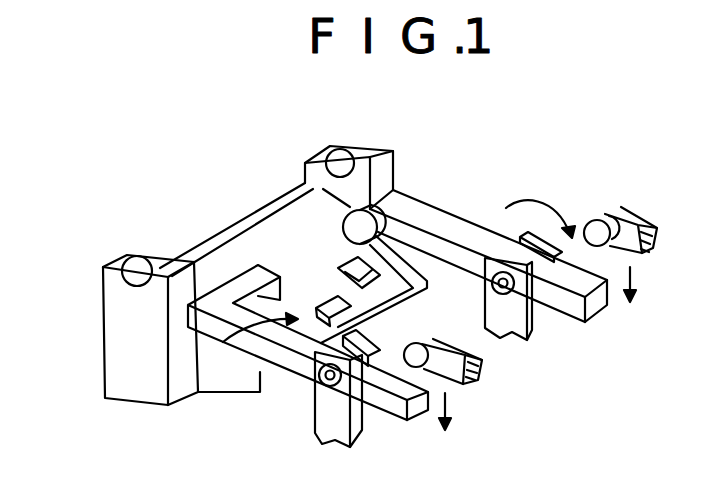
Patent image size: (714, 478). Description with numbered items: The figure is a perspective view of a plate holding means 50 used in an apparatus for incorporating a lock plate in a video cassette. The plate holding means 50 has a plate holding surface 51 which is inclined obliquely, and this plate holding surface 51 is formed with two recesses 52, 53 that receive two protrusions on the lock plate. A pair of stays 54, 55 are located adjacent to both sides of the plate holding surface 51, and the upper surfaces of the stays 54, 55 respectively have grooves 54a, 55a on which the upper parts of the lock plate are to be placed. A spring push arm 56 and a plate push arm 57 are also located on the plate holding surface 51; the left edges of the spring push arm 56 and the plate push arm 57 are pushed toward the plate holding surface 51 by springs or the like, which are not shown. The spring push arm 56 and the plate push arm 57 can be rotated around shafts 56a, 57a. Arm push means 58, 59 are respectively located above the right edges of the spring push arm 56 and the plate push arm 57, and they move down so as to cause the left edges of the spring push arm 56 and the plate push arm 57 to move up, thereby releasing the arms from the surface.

The plate holding means 50 is at (478, 171).
The plate holding surface 51 is at (222, 258).
The recess 52 is at (418, 282).
The recess 53 is at (323, 292).
The stay 54 is at (113, 347).
The groove 54a is at (138, 262).
The stay 55 is at (393, 178).
The groove 55a is at (343, 163).
The spring push arm 56 is at (240, 345).
The shaft 56a is at (312, 383).
The plate push arm 57 is at (470, 227).
The shaft 57a is at (503, 333).
The arm push means 58 is at (457, 372).
The arm push means 59 is at (623, 222).